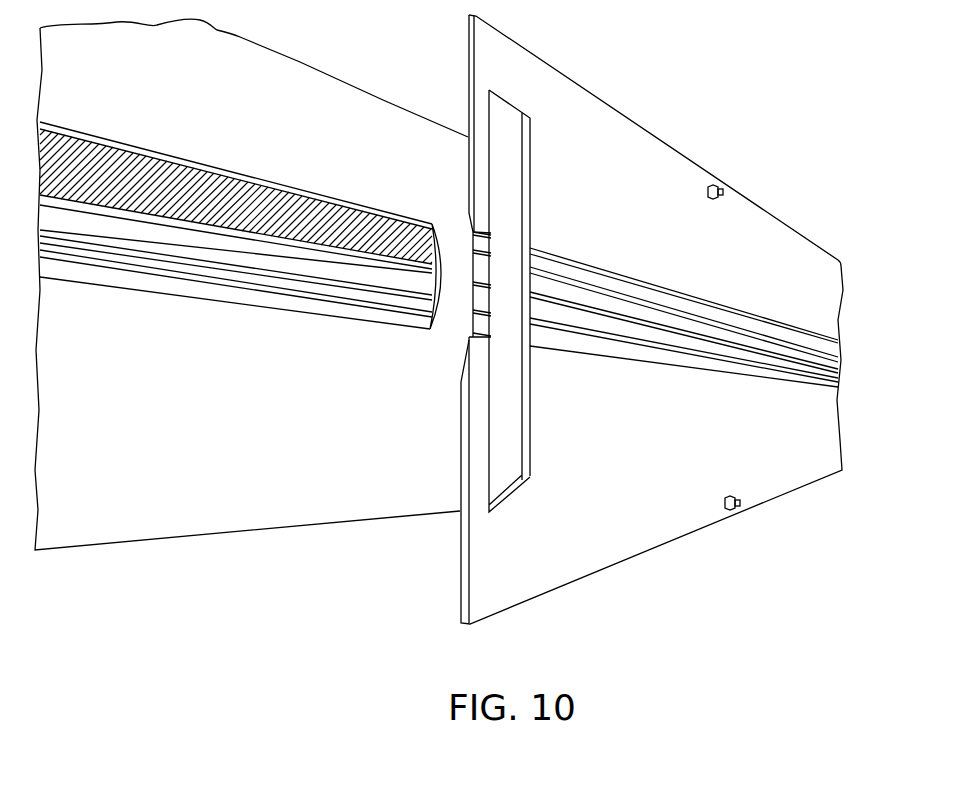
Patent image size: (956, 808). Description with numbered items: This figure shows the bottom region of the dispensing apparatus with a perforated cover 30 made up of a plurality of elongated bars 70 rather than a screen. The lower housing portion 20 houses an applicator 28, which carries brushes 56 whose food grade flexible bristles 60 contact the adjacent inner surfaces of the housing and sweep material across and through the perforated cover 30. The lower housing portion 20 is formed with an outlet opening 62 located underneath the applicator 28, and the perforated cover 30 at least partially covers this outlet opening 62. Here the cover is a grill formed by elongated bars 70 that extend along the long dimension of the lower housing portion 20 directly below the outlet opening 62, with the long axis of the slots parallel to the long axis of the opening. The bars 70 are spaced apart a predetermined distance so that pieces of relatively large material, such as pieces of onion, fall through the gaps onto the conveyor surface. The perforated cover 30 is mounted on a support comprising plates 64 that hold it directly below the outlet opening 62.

The lower housing portion 20 is at (185, 495).
The applicator 28 is at (351, 245).
The perforated cover 30 is at (655, 291).
The brush 56 is at (241, 226).
The bristles 60 is at (278, 204).
The outlet opening 62 is at (160, 158).
The plates 64 is at (628, 150).
The elongated bars 70 is at (677, 347).